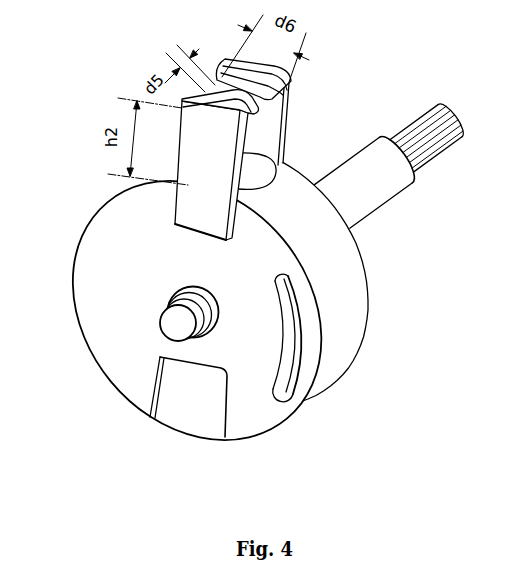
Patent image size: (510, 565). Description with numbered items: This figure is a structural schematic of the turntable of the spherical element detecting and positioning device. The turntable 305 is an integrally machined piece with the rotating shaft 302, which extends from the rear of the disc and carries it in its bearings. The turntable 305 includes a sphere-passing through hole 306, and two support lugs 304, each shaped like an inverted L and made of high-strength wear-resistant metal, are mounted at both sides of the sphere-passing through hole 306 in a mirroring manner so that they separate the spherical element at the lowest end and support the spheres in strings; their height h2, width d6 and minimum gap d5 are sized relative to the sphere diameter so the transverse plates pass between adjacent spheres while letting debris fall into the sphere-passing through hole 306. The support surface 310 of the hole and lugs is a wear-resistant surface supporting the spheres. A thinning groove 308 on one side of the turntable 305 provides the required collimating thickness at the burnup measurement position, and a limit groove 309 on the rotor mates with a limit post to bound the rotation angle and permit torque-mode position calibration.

The rotating shaft 302 is at (373, 177).
The support lug 304 is at (186, 158).
The turntable 305 is at (122, 265).
The sphere-passing through hole 306 is at (283, 147).
The thinning groove 308 is at (202, 400).
The limit groove 309 is at (297, 323).
The support surface 310 is at (297, 207).